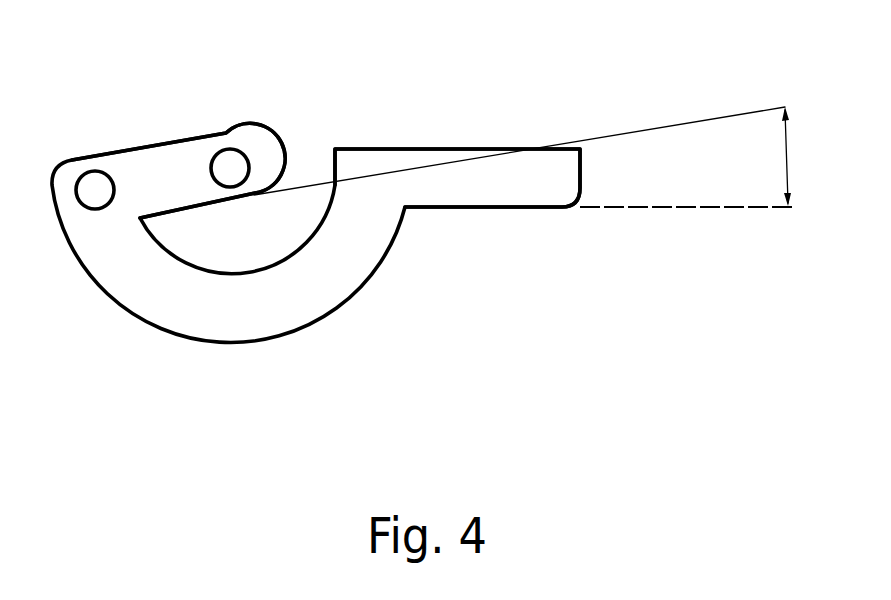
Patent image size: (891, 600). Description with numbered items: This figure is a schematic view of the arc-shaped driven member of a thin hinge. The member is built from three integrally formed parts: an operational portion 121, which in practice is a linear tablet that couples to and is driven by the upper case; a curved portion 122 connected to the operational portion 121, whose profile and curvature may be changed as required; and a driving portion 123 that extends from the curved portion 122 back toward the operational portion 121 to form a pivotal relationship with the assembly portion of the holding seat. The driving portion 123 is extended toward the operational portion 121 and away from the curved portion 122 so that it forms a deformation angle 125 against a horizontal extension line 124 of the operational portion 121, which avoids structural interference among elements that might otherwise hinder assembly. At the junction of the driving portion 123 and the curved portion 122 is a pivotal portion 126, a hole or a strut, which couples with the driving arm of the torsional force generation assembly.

The operational portion 121 is at (418, 158).
The curved portion 122 is at (268, 328).
The driving portion 123 is at (162, 160).
The horizontal extension line 124 is at (660, 207).
The deformation angle 125 is at (787, 155).
The pivotal portion 126 is at (95, 190).